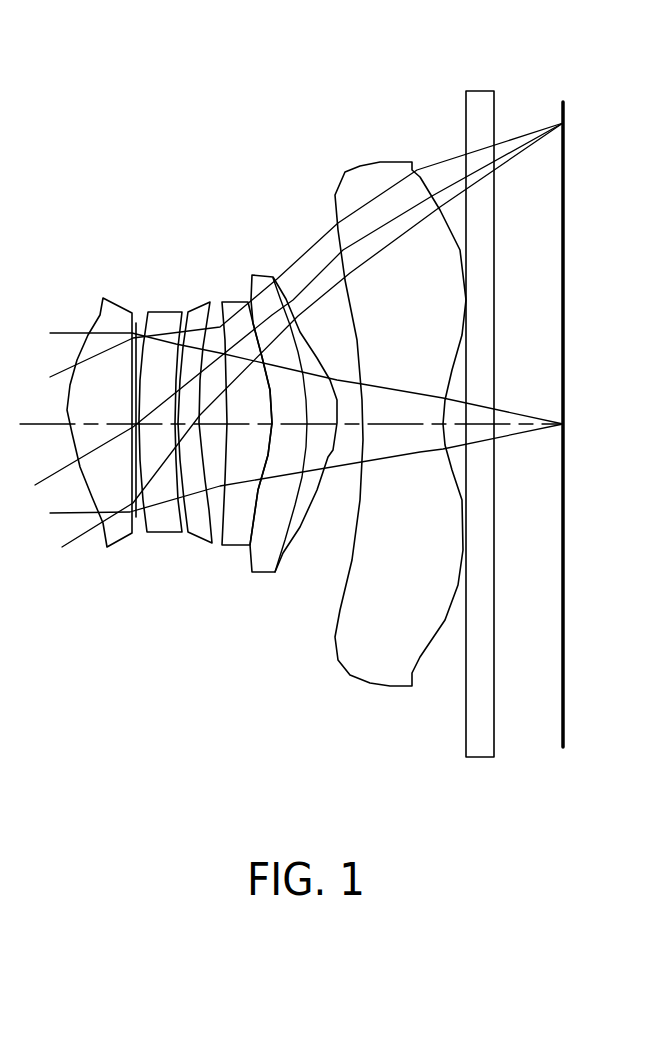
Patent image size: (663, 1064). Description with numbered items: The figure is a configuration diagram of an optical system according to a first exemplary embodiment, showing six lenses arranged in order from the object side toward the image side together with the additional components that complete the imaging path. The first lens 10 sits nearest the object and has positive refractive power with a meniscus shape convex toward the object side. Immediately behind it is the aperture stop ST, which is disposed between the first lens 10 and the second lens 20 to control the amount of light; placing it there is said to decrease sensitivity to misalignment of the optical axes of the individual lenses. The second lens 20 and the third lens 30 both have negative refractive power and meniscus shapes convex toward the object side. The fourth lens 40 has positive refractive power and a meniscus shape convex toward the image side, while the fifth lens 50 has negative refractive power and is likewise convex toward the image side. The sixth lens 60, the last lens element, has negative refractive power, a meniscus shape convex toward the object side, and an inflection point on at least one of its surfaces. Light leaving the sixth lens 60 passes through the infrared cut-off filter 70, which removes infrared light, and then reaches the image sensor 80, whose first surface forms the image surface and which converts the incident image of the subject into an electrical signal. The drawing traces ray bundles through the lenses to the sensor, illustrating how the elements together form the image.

The first lens 10 is at (125, 310).
The second lens 20 is at (163, 311).
The third lens 30 is at (200, 305).
The fourth lens 40 is at (230, 301).
The fifth lens 50 is at (263, 274).
The sixth lens 60 is at (357, 167).
The infrared cut-off filter 70 is at (483, 91).
The image sensor 80 is at (566, 152).
The aperture stop ST is at (136, 517).